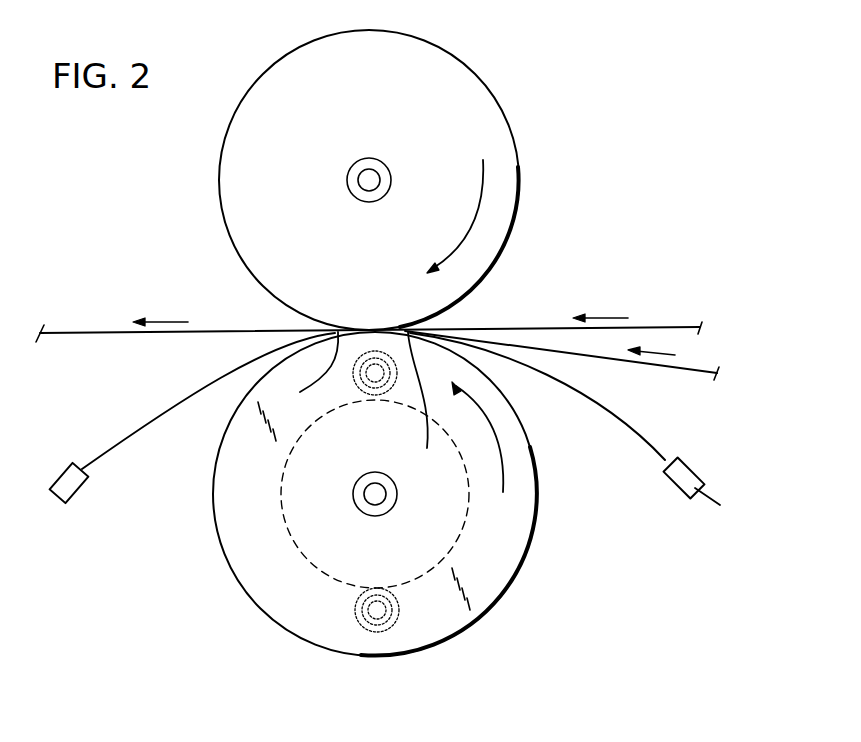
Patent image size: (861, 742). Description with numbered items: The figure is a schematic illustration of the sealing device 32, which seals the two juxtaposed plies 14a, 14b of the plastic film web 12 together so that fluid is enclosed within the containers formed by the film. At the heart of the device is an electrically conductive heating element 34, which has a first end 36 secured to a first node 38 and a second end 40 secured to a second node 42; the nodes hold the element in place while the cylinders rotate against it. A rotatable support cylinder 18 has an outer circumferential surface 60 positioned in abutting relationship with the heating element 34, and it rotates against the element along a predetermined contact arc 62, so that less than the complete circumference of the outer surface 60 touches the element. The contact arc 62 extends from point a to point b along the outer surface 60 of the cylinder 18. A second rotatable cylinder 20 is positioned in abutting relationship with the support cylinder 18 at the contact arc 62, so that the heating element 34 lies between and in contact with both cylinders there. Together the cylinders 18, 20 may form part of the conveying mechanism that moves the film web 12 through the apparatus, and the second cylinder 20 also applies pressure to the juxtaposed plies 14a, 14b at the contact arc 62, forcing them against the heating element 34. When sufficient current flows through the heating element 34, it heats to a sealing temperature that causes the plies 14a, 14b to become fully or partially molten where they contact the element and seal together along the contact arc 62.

The web of film 12 is at (222, 332).
The first film ply 14a is at (653, 328).
The second film ply 14b is at (662, 368).
The rotatable support cylinder 18 is at (496, 565).
The second cylinder 20 is at (448, 78).
The sealing device 32 is at (605, 189).
The heating element 34 is at (604, 420).
The first end 36 is at (85, 467).
The first node 38 is at (68, 490).
The second end 40 is at (665, 457).
The second node 42 is at (720, 505).
The outer circumferential surface 60 is at (456, 650).
The contact arc 62 is at (372, 332).
The point a is at (311, 373).
The point b is at (419, 403).